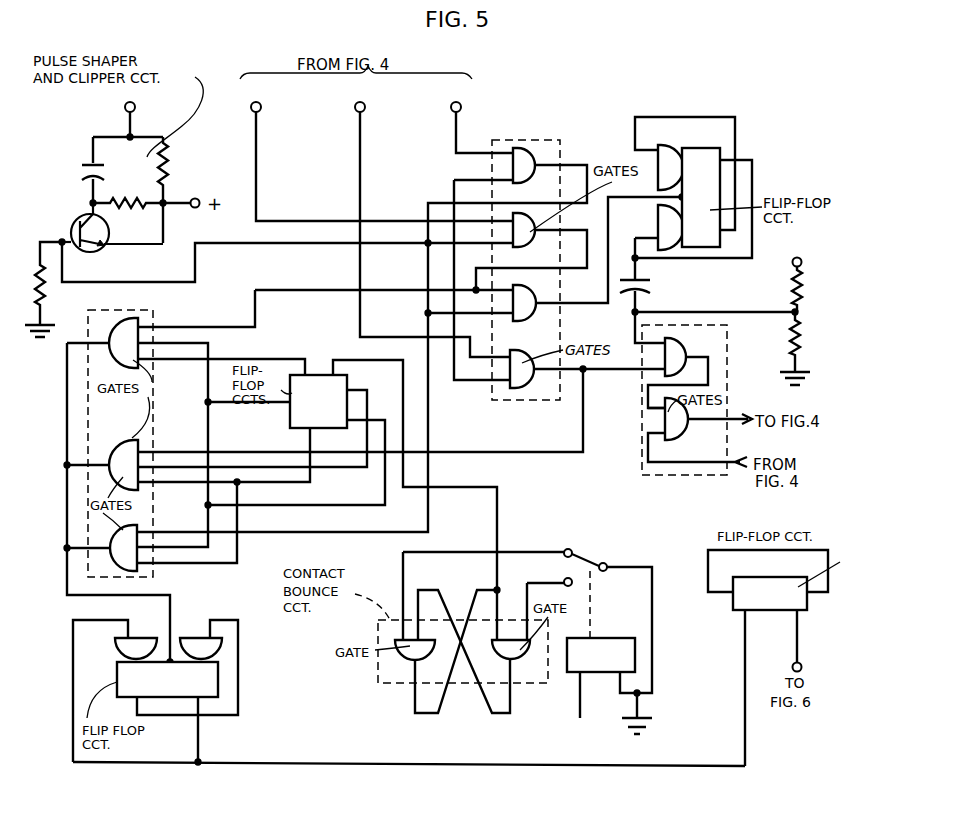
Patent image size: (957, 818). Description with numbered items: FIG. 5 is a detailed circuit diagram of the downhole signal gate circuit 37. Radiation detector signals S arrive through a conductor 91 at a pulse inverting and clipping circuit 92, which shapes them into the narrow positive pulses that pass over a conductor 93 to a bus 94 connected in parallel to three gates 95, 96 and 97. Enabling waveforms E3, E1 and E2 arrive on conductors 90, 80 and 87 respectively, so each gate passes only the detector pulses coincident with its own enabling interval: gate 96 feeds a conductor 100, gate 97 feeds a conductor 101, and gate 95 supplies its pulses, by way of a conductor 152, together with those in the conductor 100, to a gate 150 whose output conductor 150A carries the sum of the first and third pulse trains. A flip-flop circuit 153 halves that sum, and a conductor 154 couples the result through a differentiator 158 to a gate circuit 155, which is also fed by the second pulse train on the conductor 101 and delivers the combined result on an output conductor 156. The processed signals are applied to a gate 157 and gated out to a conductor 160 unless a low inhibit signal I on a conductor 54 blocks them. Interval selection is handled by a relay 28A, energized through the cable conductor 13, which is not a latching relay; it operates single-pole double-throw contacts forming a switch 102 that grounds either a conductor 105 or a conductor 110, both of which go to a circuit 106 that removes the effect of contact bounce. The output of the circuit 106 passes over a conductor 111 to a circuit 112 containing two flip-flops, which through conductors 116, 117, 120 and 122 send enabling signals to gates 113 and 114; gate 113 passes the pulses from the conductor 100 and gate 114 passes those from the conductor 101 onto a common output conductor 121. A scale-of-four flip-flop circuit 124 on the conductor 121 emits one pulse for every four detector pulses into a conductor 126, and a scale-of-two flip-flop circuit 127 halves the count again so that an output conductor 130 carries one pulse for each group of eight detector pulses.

The conductor 91 is at (136, 116).
The pulse inverting and clipping circuit 92 is at (124, 247).
The conductor 93 is at (331, 246).
The bus 94 is at (452, 187).
The gate 95 is at (522, 150).
The gate 96 is at (522, 216).
The gate 97 is at (516, 388).
The conductor 100 is at (516, 266).
The conductor 101 is at (612, 371).
The switch 102 is at (585, 565).
The conductor 105 is at (428, 552).
The contact bounce circuit 106 is at (402, 692).
The conductor 110 is at (524, 597).
The conductor 111 is at (498, 498).
The flip-flop circuit 112 is at (337, 410).
The gate 113 is at (128, 318).
The gate 114 is at (123, 449).
The conductor 116 is at (250, 359).
The conductor 117 is at (308, 442).
The conductor 120 is at (207, 428).
The output conductor 121 is at (67, 372).
The conductor 122 is at (370, 398).
The transmission processing flip-flop circuit 124 is at (188, 691).
The output conductor 126 is at (493, 762).
The scale-of-two flip-flop circuit 127 is at (785, 604).
The output conductor 130 is at (798, 652).
The gate 150 is at (524, 318).
The conductor 150A is at (527, 311).
The lead to gate 150 152 is at (443, 316).
The flip-flop circuit 153 is at (716, 193).
The conductor 154 is at (755, 182).
The gate circuit 155 is at (677, 352).
The output conductor 156 is at (710, 378).
The gate 157 is at (656, 410).
The differentiator 158 is at (648, 291).
The conductor 160 is at (712, 421).
The conductor 54 is at (667, 475).
The conductor 80 is at (258, 150).
The conductor 87 is at (358, 150).
The conductor 90 is at (453, 130).
The conductor 13 is at (578, 697).
The relay 28A is at (636, 646).
The signal gate circuit 37 is at (498, 777).
The radiation detector signals S is at (128, 125).
The waveform E1 is at (251, 132).
The waveform E2 is at (355, 118).
The waveform E3 is at (451, 118).
The inhibit signal I is at (693, 473).